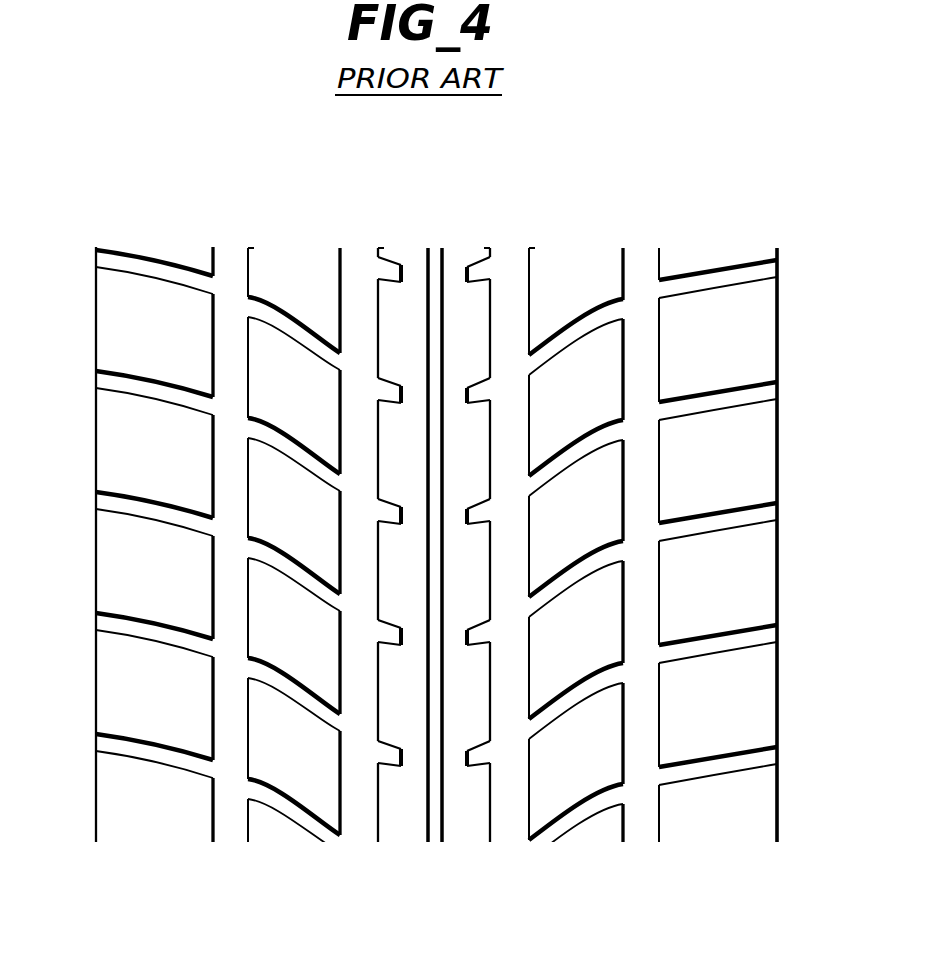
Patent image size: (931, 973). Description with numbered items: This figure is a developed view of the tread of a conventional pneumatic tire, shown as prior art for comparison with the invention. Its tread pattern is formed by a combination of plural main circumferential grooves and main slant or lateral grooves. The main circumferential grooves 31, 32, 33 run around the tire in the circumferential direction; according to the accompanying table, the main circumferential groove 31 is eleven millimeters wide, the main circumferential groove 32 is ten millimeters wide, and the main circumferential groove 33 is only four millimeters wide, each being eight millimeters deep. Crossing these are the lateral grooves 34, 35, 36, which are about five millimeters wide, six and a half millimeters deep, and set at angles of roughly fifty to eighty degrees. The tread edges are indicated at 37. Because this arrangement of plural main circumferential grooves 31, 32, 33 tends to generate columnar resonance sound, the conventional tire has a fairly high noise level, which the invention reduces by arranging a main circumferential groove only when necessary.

The main circumferential groove 31 is at (357, 267).
The main circumferential groove 32 is at (230, 262).
The main circumferential groove 33 is at (433, 258).
The lateral groove 34 is at (390, 507).
The lateral groove 35 is at (288, 443).
The lateral groove 36 is at (163, 390).
The tread edge 37 is at (95, 322).